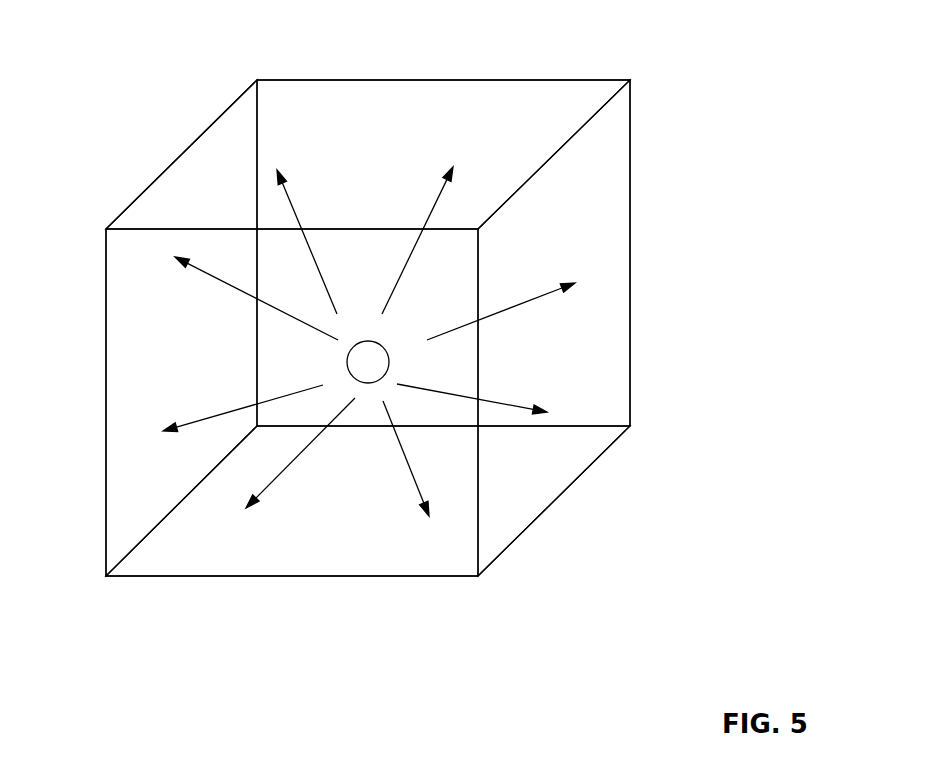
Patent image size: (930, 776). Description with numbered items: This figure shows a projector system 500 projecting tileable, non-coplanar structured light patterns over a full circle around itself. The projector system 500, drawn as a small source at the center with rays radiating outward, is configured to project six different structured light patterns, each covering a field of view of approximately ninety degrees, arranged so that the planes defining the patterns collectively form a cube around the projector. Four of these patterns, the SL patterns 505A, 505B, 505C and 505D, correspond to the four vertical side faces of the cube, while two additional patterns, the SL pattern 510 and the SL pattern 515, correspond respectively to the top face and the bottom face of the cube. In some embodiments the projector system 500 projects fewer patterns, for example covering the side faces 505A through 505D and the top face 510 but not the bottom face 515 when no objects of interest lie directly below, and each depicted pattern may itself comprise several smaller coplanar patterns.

The projector system 500 is at (369, 341).
The SL pattern corresponding to top face 510 is at (306, 117).
The SL pattern corresponding to vertical face 505A is at (190, 553).
The SL pattern corresponding to vertical face 505B is at (570, 458).
The SL pattern corresponding to vertical face 505C is at (498, 78).
The SL pattern corresponding to vertical face 505D is at (106, 343).
The SL pattern corresponding to bottom face 515 is at (323, 577).